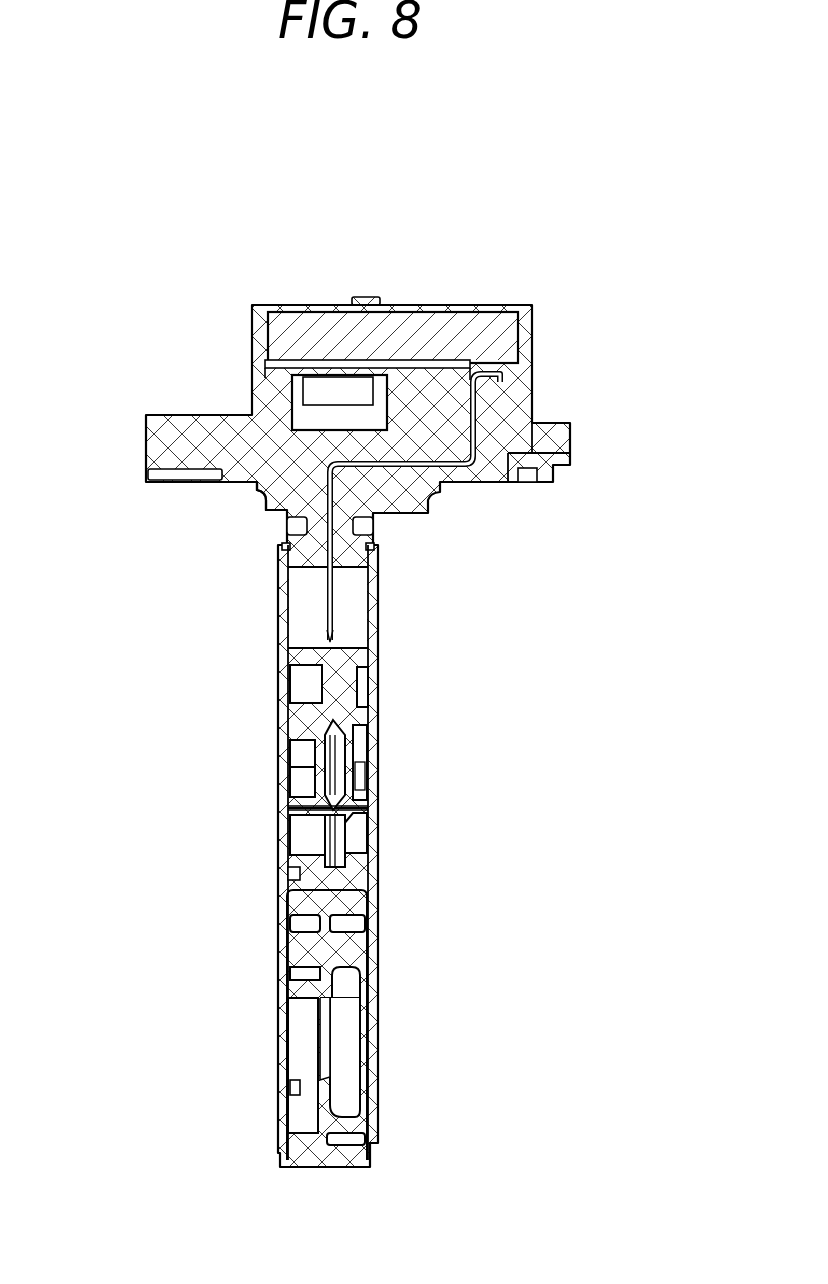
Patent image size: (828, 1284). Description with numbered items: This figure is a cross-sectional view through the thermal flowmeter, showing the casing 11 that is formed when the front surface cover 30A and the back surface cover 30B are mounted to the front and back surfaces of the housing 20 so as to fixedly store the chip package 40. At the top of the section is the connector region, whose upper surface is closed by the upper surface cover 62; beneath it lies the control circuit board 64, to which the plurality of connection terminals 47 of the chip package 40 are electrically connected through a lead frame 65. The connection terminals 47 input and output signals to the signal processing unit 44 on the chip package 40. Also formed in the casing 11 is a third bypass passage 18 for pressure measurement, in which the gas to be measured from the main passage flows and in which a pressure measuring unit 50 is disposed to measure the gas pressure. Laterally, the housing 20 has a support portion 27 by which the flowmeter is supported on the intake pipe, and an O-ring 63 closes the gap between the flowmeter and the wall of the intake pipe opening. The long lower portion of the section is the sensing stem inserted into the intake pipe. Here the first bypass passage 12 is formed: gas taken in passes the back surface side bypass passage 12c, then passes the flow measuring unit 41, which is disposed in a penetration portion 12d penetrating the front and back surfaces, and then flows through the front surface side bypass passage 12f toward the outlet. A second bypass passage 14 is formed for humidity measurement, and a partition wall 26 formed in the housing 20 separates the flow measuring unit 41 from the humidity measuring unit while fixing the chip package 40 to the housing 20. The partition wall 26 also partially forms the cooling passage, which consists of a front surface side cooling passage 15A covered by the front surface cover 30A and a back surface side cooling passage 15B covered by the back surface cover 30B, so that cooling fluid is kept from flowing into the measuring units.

The casing 11 is at (503, 600).
The first bypass passage 12 is at (328, 838).
The back surface side bypass passage 12c is at (295, 1052).
The penetration portion 12d is at (300, 838).
The front surface side bypass passage 12f is at (345, 1056).
The second bypass passage 14 is at (362, 675).
The front surface side cooling passage 15A is at (362, 772).
The back surface side cooling passage 15B is at (300, 788).
The third bypass passage 18 is at (305, 416).
The housing 20 is at (300, 708).
The partition wall 26 is at (365, 808).
The support portion 27 is at (235, 432).
The front surface cover 30A is at (352, 1004).
The back surface cover 30B is at (290, 1000).
The chip package 40 is at (360, 816).
The flow measuring unit 41 is at (345, 835).
The signal processing unit 44 is at (296, 753).
The connection terminals 47 is at (336, 618).
The pressure measuring unit 50 is at (333, 397).
The upper surface cover 62 is at (455, 325).
The O-ring 63 is at (260, 495).
The control circuit board 64 is at (462, 362).
The lead frame 65 is at (490, 443).